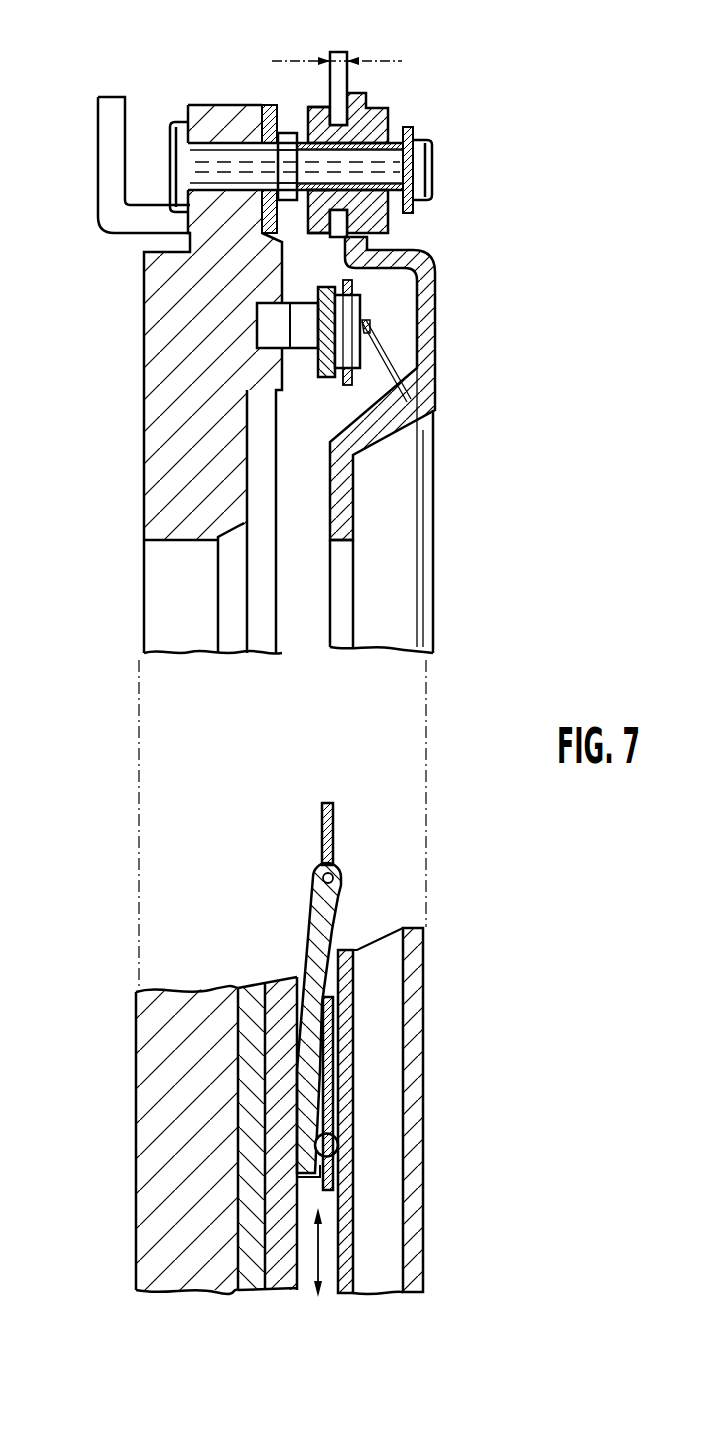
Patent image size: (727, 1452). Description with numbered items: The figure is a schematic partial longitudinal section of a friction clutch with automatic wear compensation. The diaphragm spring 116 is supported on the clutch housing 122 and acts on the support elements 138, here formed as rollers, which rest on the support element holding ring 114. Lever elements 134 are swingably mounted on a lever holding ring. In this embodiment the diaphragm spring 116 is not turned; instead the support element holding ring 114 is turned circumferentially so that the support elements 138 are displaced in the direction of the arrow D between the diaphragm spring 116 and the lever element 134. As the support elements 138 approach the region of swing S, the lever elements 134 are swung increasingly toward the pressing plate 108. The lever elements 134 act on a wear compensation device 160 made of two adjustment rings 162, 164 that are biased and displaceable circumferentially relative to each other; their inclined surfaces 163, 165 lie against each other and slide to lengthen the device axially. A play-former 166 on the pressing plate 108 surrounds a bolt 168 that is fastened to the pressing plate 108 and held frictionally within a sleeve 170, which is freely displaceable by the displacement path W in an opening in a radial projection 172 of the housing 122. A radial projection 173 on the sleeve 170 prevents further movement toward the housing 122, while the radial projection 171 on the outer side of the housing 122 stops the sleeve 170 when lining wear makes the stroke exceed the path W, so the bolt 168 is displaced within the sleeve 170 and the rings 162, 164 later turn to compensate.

The pressing plate 108 is at (165, 506).
The support element holding ring 114 is at (322, 826).
The diaphragm spring 116 is at (383, 368).
The clutch housing 122 is at (418, 990).
The lever element 134 is at (352, 463).
The support element 138 is at (357, 313).
The wear compensation device 160 is at (215, 975).
The adjustment ring 162 is at (300, 337).
The inclined surface 163 is at (268, 1057).
The adjustment ring 164 is at (273, 320).
The inclined surface 165 is at (265, 1092).
The play-former 166 is at (216, 90).
The bolt 168 is at (393, 163).
The sleeve 170 is at (390, 108).
The radial projection 171 is at (380, 227).
The radial projection 172 is at (347, 100).
The radial projection 173 is at (308, 108).
The displacement path W is at (339, 58).
The region of swing S is at (303, 866).
The direction of displacement D is at (318, 1250).